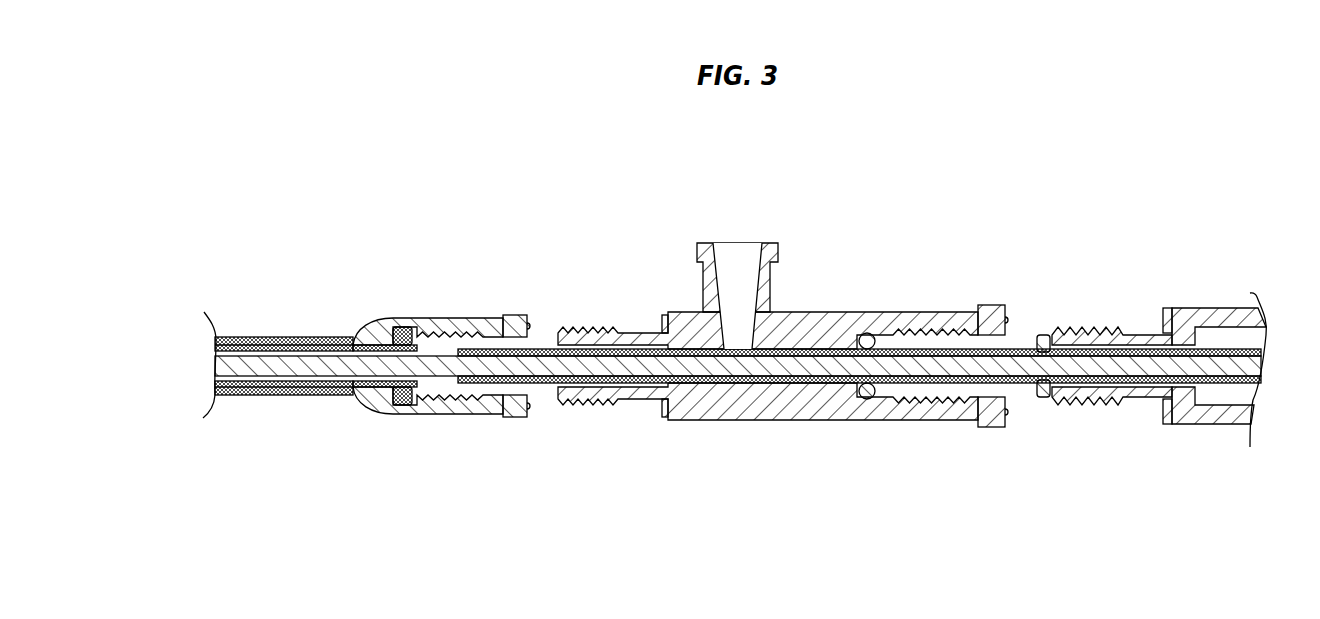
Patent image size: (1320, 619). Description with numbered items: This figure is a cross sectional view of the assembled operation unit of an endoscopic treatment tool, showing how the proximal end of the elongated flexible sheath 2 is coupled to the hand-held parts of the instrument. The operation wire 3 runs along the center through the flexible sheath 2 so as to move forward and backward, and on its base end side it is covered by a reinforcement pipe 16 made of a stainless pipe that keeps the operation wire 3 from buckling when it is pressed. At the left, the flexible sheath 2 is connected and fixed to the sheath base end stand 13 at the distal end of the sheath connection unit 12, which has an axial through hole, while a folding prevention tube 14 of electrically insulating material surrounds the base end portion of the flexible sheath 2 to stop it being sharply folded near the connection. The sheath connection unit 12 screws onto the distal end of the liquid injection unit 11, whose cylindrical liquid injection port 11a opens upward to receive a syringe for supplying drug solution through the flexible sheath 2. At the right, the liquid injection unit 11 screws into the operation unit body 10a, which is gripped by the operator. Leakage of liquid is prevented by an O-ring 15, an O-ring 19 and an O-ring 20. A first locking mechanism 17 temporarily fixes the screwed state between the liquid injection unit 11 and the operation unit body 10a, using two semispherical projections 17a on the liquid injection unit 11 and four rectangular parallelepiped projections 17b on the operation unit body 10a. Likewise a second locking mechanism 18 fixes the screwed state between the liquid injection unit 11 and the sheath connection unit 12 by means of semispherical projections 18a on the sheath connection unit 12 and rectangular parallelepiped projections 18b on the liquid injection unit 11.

The flexible sheath 2 is at (712, 362).
The operation wire 3 is at (824, 378).
The operation unit body 10a is at (1204, 340).
The liquid injection unit 11 is at (798, 352).
The liquid injection port 11a is at (700, 246).
The sheath connection unit 12 is at (441, 393).
The sheath base end stand 13 is at (290, 395).
The folding prevention tube 14 is at (310, 337).
The O-ring 15 is at (402, 406).
The reinforcement pipe 16 is at (1150, 333).
The first locking mechanism 17 is at (1167, 518).
The semispherical projection 17a is at (1008, 428).
The rectangular parallelepiped projection 17b is at (1163, 424).
The second locking mechanism 18 is at (647, 557).
The semispherical projection 18a is at (530, 419).
The rectangular parallelepiped projection 18b is at (664, 418).
The O-ring 19 is at (1043, 335).
The O-ring 20 is at (869, 333).